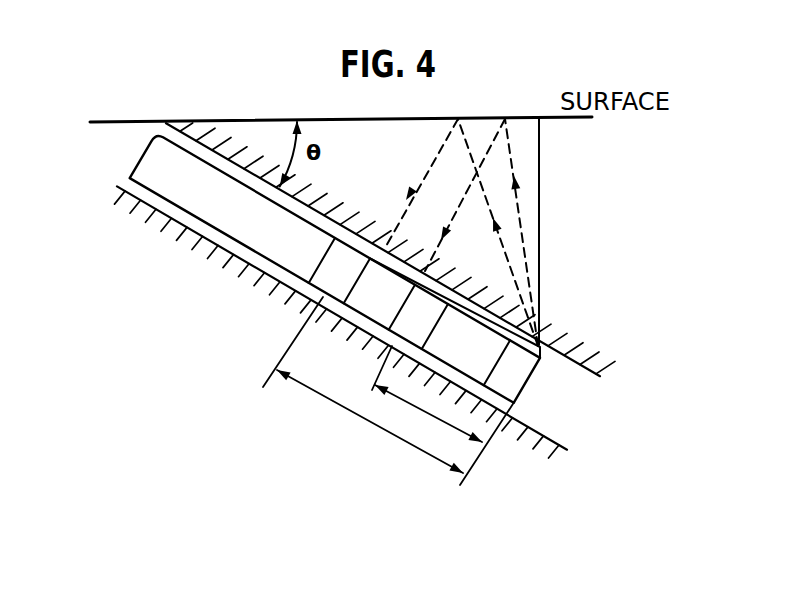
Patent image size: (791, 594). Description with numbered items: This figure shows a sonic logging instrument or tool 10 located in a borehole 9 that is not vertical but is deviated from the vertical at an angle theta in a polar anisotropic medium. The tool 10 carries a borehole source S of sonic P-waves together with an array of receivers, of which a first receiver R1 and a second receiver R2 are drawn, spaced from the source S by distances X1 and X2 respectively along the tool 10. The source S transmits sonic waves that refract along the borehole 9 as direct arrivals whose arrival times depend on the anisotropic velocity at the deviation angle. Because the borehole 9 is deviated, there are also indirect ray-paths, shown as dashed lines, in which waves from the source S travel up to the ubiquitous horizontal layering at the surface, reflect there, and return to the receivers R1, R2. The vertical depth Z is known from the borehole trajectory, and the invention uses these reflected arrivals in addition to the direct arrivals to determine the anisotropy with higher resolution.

The borehole 9 is at (590, 373).
The sonic logging tool 10 is at (300, 269).
The first receiver R1 is at (418, 317).
The second receiver R2 is at (339, 270).
The borehole source S is at (502, 364).
The depth coordinate Z is at (553, 231).
The source-to-first-receiver spacing X1 is at (443, 415).
The source-to-second-receiver spacing X2 is at (363, 385).